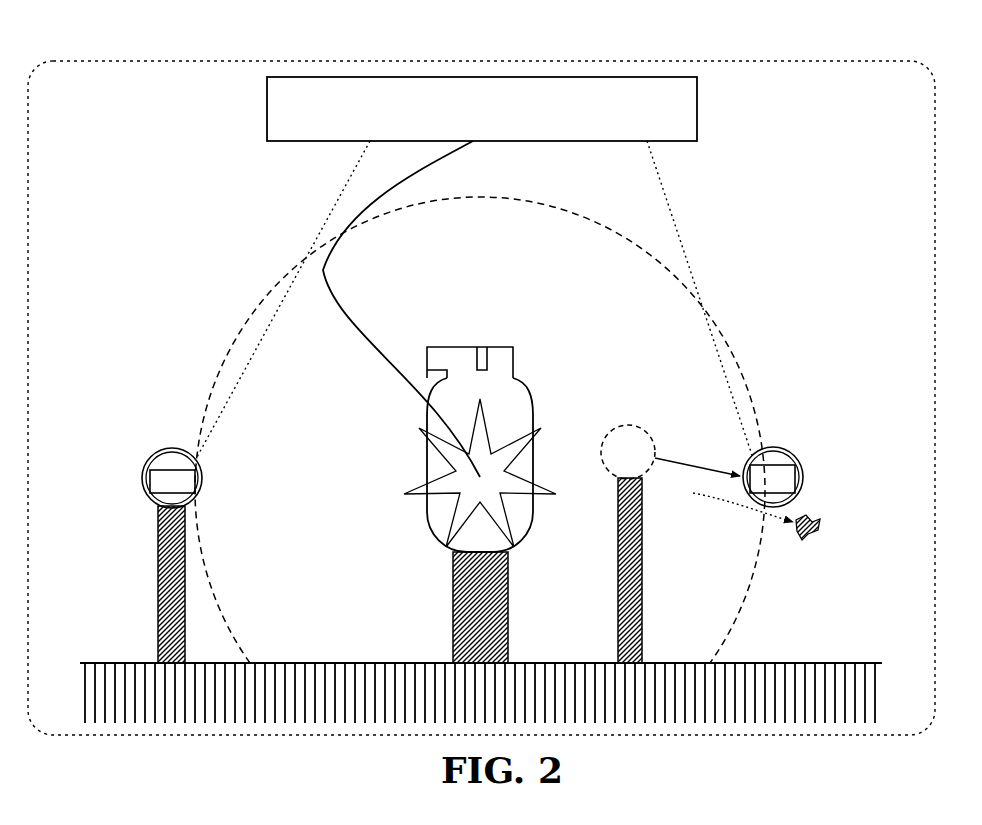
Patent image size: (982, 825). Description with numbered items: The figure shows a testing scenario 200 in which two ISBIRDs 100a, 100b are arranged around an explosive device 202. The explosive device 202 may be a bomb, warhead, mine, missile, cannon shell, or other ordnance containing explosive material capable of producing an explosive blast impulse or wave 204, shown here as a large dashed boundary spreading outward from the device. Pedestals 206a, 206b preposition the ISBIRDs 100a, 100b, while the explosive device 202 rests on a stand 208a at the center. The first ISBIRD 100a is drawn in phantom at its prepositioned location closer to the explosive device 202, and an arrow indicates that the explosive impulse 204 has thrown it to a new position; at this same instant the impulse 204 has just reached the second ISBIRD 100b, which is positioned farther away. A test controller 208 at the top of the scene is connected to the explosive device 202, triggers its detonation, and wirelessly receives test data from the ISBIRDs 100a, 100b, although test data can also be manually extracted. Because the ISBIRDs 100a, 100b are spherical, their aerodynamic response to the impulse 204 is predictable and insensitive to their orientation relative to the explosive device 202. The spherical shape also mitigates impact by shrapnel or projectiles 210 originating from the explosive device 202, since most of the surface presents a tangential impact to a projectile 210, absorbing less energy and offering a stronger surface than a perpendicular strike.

The testing scenario 200 is at (127, 110).
The explosive device 202 is at (427, 523).
The explosive blast impulse or wave 204 is at (742, 378).
The pedestal 206a is at (618, 557).
The pedestal 206b is at (158, 603).
The test controller 208 is at (482, 109).
The pedestal 208a is at (508, 640).
The shrapnel or projectiles 210 is at (808, 540).
The ISBIRD 100a is at (630, 428).
The ISBIRD 100b is at (165, 448).